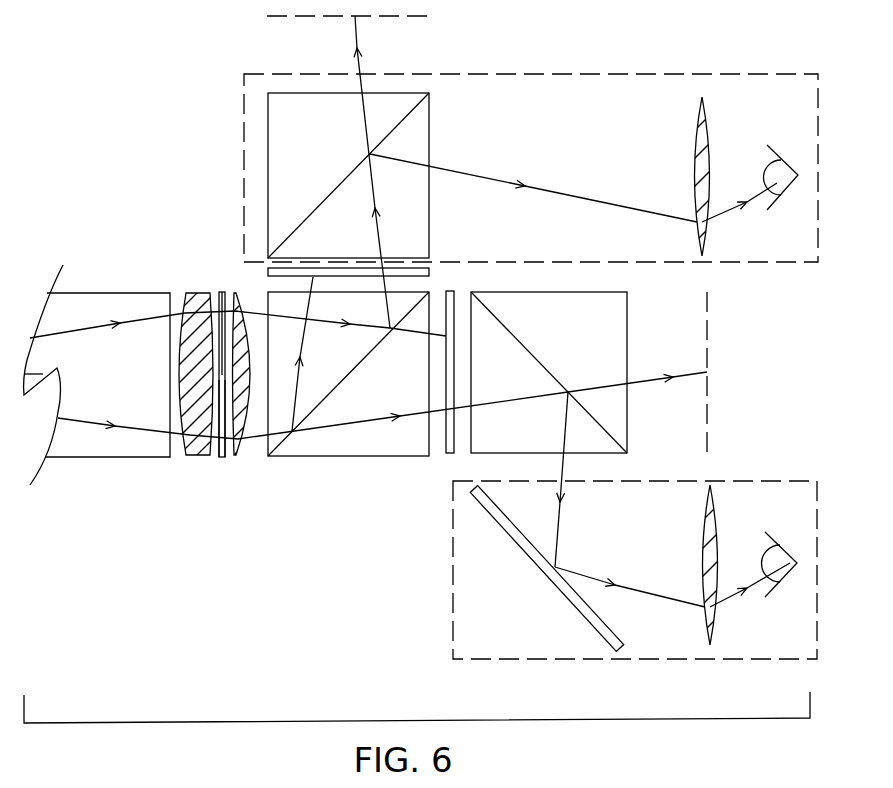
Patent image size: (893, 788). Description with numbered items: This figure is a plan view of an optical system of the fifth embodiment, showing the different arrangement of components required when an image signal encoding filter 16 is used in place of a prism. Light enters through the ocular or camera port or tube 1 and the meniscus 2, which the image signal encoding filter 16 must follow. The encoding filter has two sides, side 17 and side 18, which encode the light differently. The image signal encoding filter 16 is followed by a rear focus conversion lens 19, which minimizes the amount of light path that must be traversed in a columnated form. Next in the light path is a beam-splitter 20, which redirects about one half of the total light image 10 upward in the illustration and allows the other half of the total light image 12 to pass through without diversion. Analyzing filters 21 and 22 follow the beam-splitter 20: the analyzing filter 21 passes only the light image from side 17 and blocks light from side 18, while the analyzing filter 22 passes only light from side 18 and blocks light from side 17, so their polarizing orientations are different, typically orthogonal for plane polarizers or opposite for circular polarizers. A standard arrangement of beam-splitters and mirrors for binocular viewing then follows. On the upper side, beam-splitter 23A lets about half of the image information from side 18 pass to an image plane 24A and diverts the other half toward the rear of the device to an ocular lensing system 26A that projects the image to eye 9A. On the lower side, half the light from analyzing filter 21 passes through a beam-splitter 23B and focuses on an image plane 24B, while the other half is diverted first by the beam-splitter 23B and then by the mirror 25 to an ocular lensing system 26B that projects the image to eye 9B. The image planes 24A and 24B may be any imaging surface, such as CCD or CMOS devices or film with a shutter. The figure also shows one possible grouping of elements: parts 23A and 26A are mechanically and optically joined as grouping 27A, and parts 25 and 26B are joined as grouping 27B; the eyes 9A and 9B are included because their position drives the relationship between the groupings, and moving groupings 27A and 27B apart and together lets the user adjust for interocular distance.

The ocular or camera port or tube 1 is at (95, 462).
The meniscus 2 is at (200, 300).
The eye 9A is at (787, 175).
The eye 9B is at (790, 563).
The total light image 10 is at (62, 327).
The total light image 12 is at (93, 422).
The image signal encoding filter 16 is at (218, 460).
The side of the image signal encoding filter 17 is at (225, 457).
The side of the image signal encoding filter 18 is at (222, 292).
The rear focus conversion lens 19 is at (240, 447).
The beam-splitter 20 is at (357, 463).
The analyzing filter 21 is at (450, 298).
The analyzing filter 22 is at (425, 270).
The beam-splitter 23A is at (262, 140).
The beam-splitter 23B is at (520, 285).
The image plane 24A is at (413, 16).
The image plane 24B is at (707, 330).
The mirror 25 is at (532, 550).
The ocular lensing system 26A is at (705, 142).
The ocular lensing system 26B is at (707, 525).
The grouping 27A is at (237, 182).
The grouping 27B is at (443, 637).